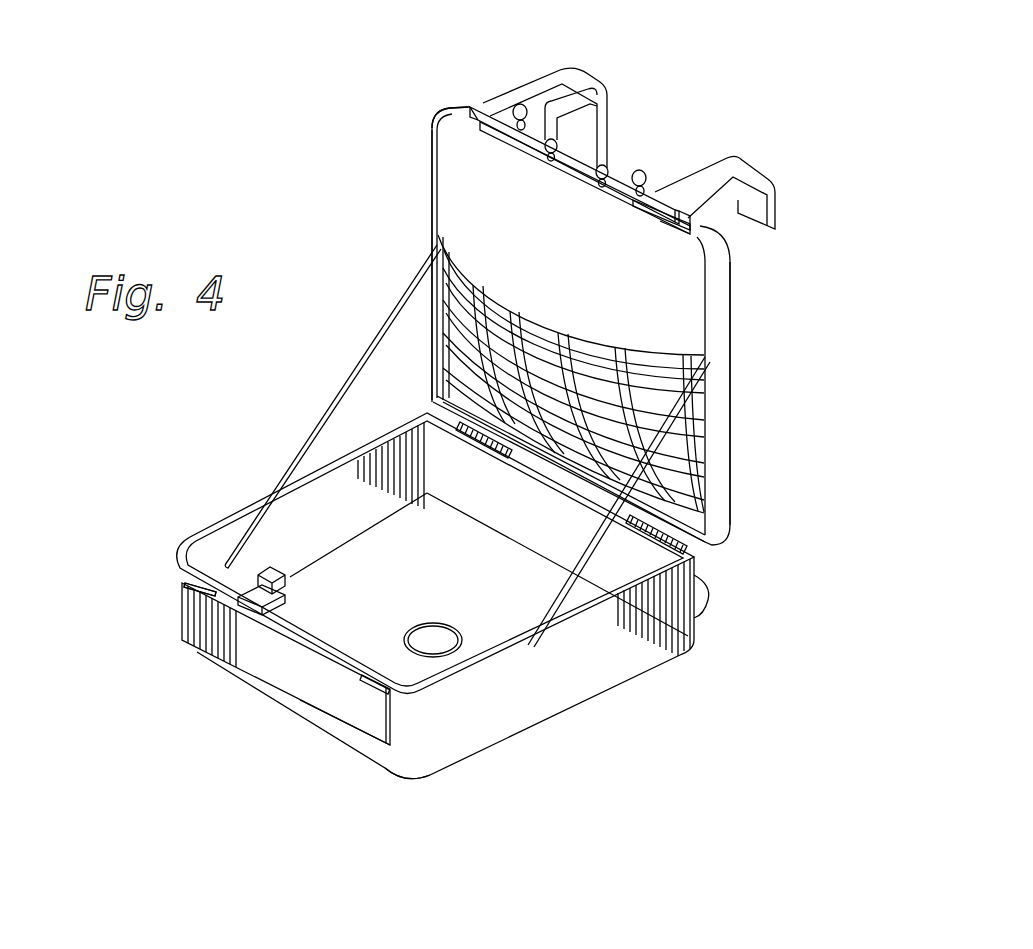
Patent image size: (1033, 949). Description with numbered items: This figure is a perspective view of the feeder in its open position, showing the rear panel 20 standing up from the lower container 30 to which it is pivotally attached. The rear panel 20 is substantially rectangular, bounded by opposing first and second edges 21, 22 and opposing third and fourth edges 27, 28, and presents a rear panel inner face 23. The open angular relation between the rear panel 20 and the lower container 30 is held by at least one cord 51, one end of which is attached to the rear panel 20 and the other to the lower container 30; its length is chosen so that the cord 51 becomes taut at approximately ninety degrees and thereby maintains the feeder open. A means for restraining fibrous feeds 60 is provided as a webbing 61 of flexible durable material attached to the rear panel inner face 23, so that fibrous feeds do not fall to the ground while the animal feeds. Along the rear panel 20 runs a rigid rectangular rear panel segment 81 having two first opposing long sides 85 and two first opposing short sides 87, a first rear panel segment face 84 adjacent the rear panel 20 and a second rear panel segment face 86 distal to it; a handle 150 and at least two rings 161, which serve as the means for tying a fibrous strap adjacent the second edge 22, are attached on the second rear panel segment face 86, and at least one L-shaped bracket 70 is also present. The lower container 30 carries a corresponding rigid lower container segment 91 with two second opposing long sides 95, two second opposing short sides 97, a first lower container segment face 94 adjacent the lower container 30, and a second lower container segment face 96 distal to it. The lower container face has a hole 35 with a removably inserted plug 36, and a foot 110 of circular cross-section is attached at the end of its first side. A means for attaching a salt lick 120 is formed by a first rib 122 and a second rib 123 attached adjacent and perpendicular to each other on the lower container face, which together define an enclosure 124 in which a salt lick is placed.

The rear panel 20 is at (808, 302).
The first edge 21 is at (489, 564).
The second edge 22 is at (447, 106).
The rear panel inner face 23 is at (500, 207).
The third edge 27 is at (702, 320).
The fourth edge 28 is at (428, 160).
The lower container 30 is at (558, 682).
The hole 35 is at (440, 623).
The plug 36 is at (450, 597).
The cord 51 is at (315, 427).
The means for restraining fibrous feeds 60 is at (752, 416).
The webbing 61 is at (704, 505).
The L-shaped bracket 70 is at (573, 74).
The rear panel segment 81 is at (660, 200).
The first rear panel segment face 84 is at (664, 222).
The first opposing long sides 85 is at (620, 203).
The second rear panel segment face 86 is at (688, 214).
The first opposing short sides 87 is at (481, 103).
The lower container segment 91 is at (240, 668).
The first lower container segment face 94 is at (395, 730).
The second opposing long sides 95 is at (305, 680).
The second lower container segment face 96 is at (365, 722).
The second opposing short sides 97 is at (180, 627).
The foot 110 is at (712, 600).
The means for attaching a salt lick 120 is at (210, 548).
The first rib 122 is at (272, 567).
The second rib 123 is at (286, 601).
The enclosure 124 is at (190, 582).
The handle 150 is at (598, 110).
The rings 161 is at (517, 104).